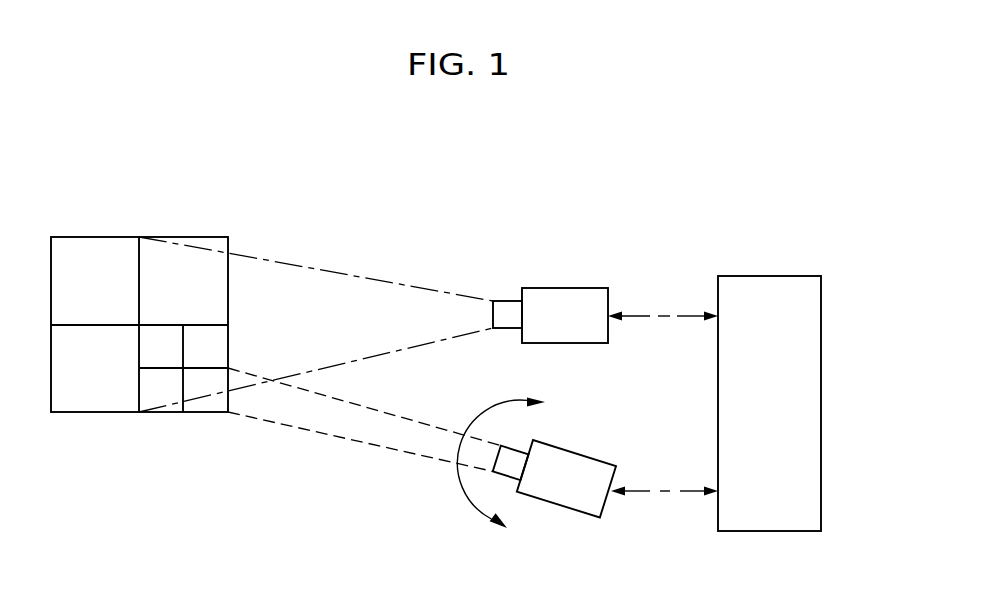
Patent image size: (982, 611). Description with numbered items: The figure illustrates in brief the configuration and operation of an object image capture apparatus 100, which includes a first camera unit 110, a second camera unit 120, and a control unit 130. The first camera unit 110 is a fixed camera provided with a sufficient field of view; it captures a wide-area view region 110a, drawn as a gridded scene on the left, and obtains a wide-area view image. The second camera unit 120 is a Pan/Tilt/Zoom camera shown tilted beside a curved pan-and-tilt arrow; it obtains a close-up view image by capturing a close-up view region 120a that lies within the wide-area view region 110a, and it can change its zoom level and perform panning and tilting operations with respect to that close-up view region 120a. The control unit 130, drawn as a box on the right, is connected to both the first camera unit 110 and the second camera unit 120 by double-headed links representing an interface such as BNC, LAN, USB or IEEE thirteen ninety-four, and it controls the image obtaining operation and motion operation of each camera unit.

The object image capture apparatus 100 is at (443, 176).
The first camera unit 110 is at (568, 288).
The wide-area view region 110a is at (315, 264).
The second camera unit 120 is at (582, 450).
The close-up view region 120a is at (327, 440).
The control unit 130 is at (769, 276).